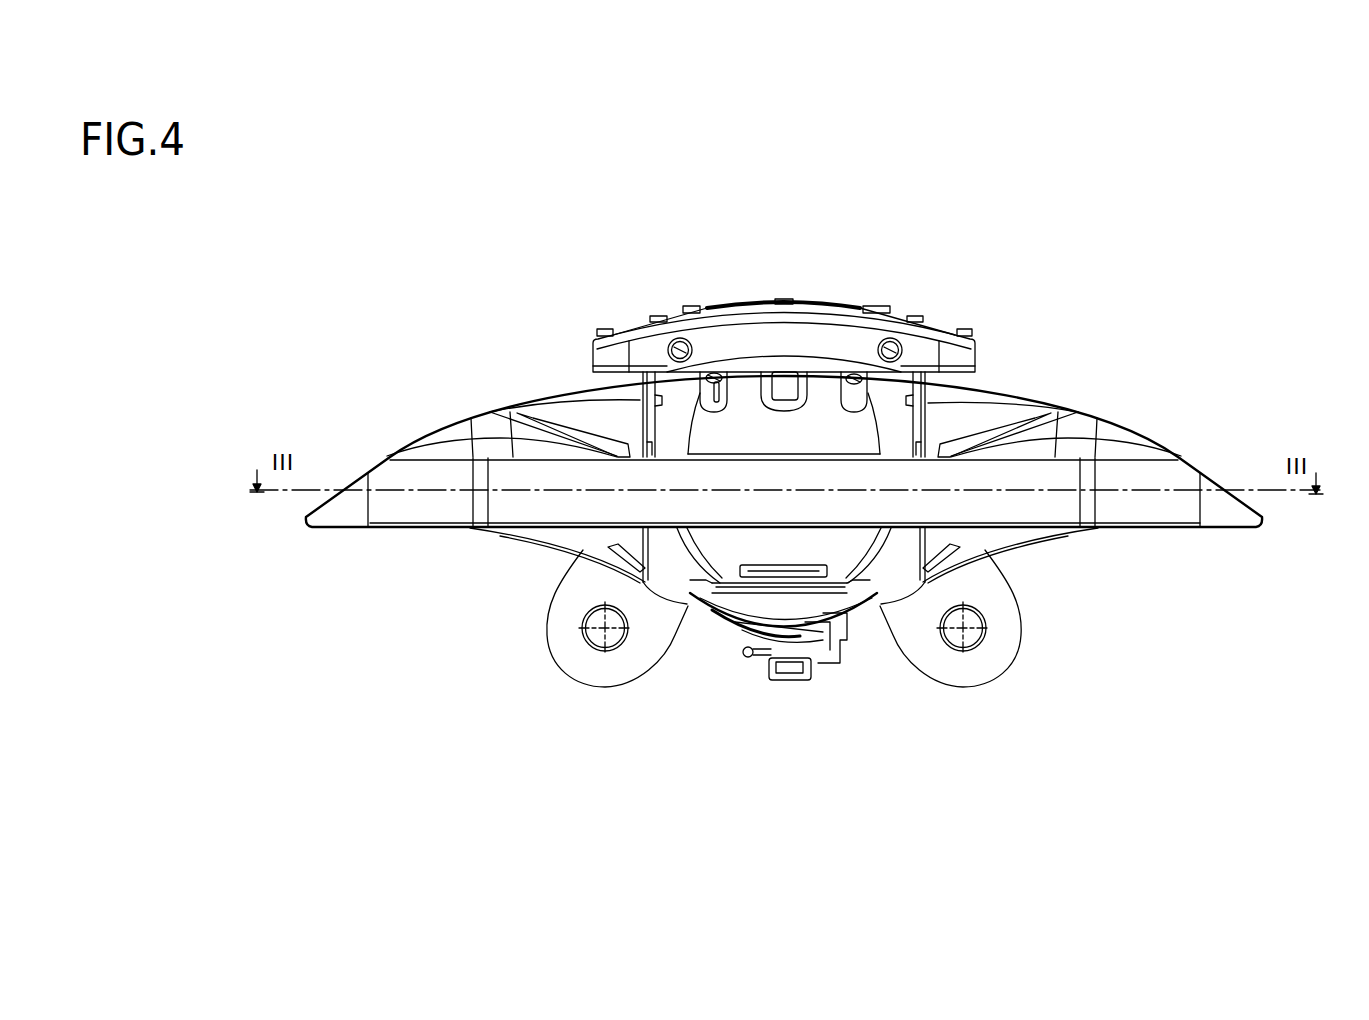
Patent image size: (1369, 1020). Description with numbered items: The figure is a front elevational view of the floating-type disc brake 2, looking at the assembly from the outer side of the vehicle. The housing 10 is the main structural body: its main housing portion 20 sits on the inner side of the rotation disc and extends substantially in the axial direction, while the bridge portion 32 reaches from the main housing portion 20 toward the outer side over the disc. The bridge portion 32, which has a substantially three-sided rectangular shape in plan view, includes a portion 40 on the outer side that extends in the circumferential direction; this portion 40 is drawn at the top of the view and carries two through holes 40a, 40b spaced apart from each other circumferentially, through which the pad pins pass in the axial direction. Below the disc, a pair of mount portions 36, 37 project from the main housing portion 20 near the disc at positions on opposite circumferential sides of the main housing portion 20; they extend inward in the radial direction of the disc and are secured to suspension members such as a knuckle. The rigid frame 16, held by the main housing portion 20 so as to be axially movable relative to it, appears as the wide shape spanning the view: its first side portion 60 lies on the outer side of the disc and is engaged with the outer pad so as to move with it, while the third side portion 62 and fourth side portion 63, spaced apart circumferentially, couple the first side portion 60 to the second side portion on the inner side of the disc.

The disc brake 2 is at (1079, 331).
The housing 10 is at (784, 641).
The frame 16 is at (1180, 445).
The main housing portion 20 is at (782, 607).
The bridge portion 32 is at (931, 311).
The mount portion 36 is at (1000, 653).
The mount portion 37 is at (580, 670).
The portion 40 is at (823, 332).
The through hole 40a is at (890, 339).
The through hole 40b is at (680, 339).
The first side portion 60 is at (1003, 512).
The third side portion 62 is at (1103, 437).
The fourth side portion 63 is at (467, 433).